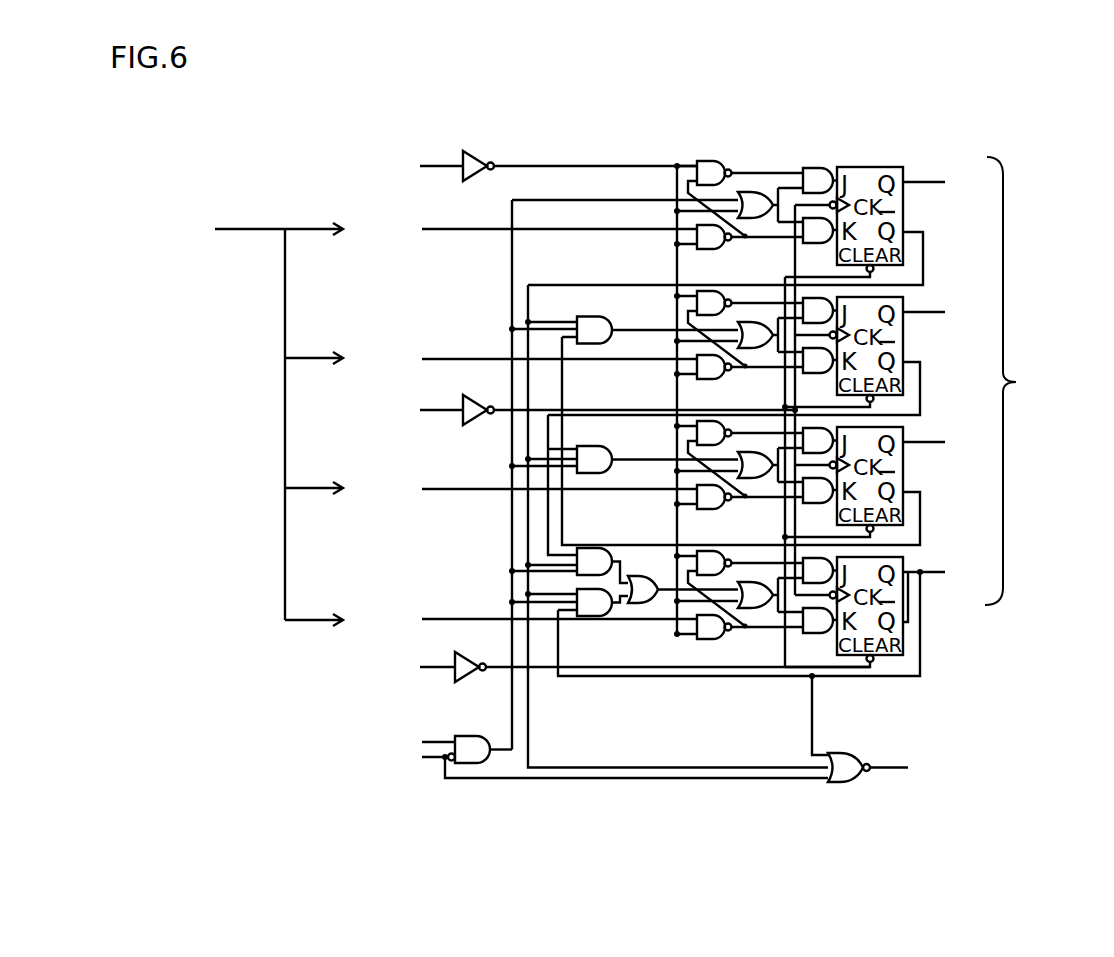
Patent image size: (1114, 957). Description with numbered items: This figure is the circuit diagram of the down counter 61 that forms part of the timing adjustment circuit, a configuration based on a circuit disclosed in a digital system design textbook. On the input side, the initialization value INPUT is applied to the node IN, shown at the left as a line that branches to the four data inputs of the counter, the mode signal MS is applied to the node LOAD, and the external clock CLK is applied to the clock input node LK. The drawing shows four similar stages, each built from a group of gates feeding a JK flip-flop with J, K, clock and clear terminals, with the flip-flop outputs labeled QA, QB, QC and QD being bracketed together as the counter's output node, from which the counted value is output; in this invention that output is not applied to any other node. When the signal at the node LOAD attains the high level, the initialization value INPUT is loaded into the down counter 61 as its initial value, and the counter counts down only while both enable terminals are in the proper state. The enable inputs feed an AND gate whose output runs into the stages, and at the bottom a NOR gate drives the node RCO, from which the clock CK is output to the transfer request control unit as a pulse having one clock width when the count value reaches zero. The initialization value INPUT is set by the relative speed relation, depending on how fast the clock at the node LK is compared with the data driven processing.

The down counter 61 is at (1020, 103).
The node IN is at (264, 422).
The output QA of first flip-flop QA is at (940, 183).
The output QB of second flip-flop QB is at (939, 313).
The output QC of third flip-flop QC is at (939, 443).
The output QD of fourth flip-flop QD is at (940, 573).
The node RCO is at (937, 770).
The node LOAD is at (524, 166).
The clock input node LK is at (590, 410).